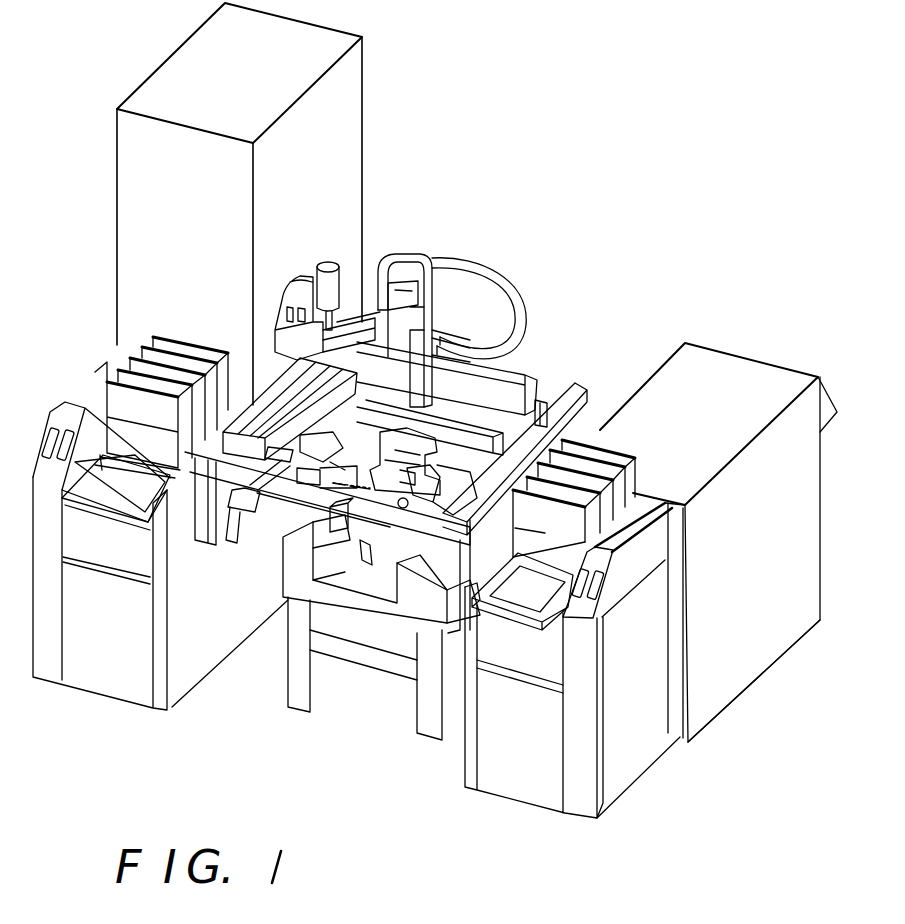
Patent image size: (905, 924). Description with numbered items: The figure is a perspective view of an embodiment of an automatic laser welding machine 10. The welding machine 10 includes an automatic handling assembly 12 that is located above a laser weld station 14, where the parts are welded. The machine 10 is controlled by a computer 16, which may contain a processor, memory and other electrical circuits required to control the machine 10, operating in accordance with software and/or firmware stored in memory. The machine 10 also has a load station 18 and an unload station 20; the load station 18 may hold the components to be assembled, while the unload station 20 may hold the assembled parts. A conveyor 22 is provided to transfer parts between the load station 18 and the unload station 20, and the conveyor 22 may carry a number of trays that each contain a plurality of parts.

The automatic laser welding machine 10 is at (557, 297).
The automatic handling assembly 12 is at (528, 378).
The laser weld station 14 is at (332, 593).
The computer 16 is at (322, 170).
The load station 18 is at (113, 598).
The unload station 20 is at (553, 732).
The conveyor 22 is at (400, 527).